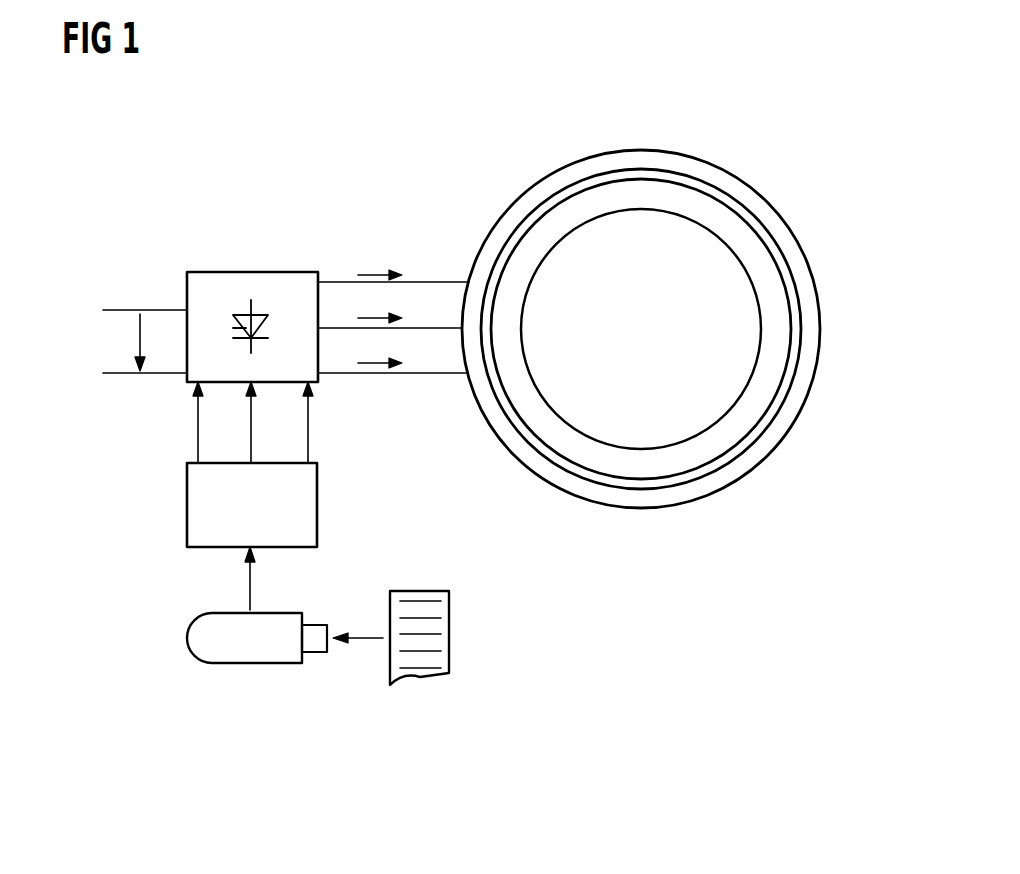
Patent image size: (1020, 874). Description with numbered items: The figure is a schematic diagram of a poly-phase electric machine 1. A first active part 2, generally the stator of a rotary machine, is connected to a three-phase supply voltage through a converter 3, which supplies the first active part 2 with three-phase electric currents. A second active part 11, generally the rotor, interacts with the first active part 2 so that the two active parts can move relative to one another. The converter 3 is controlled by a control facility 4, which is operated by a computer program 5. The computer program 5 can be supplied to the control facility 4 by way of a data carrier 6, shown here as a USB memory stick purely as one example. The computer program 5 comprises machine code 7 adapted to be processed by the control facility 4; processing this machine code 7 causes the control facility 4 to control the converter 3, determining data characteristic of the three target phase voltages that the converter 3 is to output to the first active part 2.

The electric machine 1 is at (752, 121).
The first active part 2 is at (631, 149).
The converter 3 is at (241, 272).
The control facility 4 is at (187, 503).
The computer program 5 is at (430, 680).
The data carrier 6 is at (247, 664).
The machine code 7 is at (438, 612).
The second active part 11 is at (713, 237).